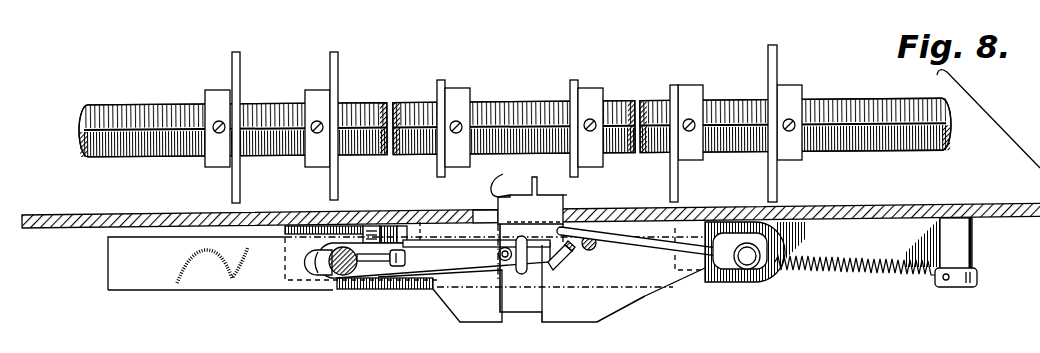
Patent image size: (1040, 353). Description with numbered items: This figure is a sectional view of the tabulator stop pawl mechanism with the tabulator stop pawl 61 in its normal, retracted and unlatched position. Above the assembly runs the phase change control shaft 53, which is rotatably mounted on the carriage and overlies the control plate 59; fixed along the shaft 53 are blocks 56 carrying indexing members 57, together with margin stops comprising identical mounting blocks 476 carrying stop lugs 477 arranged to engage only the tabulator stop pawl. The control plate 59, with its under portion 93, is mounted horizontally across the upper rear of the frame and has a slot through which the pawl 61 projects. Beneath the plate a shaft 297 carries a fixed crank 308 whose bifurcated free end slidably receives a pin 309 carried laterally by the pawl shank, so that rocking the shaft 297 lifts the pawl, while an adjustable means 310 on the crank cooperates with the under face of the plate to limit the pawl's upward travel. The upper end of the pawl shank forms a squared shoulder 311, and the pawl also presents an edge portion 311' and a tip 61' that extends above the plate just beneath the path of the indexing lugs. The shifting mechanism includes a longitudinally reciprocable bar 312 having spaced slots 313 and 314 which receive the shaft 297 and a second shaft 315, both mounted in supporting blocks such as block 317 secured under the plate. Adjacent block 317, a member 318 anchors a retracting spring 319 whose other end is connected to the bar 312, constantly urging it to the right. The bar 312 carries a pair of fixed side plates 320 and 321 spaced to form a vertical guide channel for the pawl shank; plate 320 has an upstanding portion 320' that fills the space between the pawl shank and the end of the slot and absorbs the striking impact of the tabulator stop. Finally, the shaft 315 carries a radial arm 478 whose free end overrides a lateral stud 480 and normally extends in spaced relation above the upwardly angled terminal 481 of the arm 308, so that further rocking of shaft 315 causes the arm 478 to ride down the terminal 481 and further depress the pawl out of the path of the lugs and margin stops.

The phase change control shaft 53 is at (837, 100).
The mounting block 476 is at (207, 90).
The stop lug 477 is at (330, 60).
The indexing member 57 is at (572, 80).
The block 56 is at (593, 90).
The control plate 59 is at (842, 204).
The upstanding portion 320' is at (468, 196).
The tip 61' is at (530, 198).
The edge portion 311' is at (501, 177).
The shoulder 311 is at (588, 195).
The adjustable means 310 is at (398, 230).
The crank 308 is at (427, 240).
The reciprocable bar 312 is at (160, 277).
The slot 313 is at (307, 260).
The upwardly angled terminal 481 is at (449, 264).
The shaft 297 is at (330, 272).
The pin 309 is at (498, 254).
The lateral stud 480 is at (594, 237).
The side plate 320 is at (419, 302).
The tabulator stop pawl 61 is at (571, 284).
The side plate 321 is at (620, 283).
The radial arm 478 is at (652, 241).
The slot 314 is at (732, 233).
The shaft 315 is at (763, 250).
The retracting spring 319 is at (857, 267).
The supporting block 317 is at (905, 232).
The under portion 93 is at (960, 242).
The member 318 is at (978, 277).